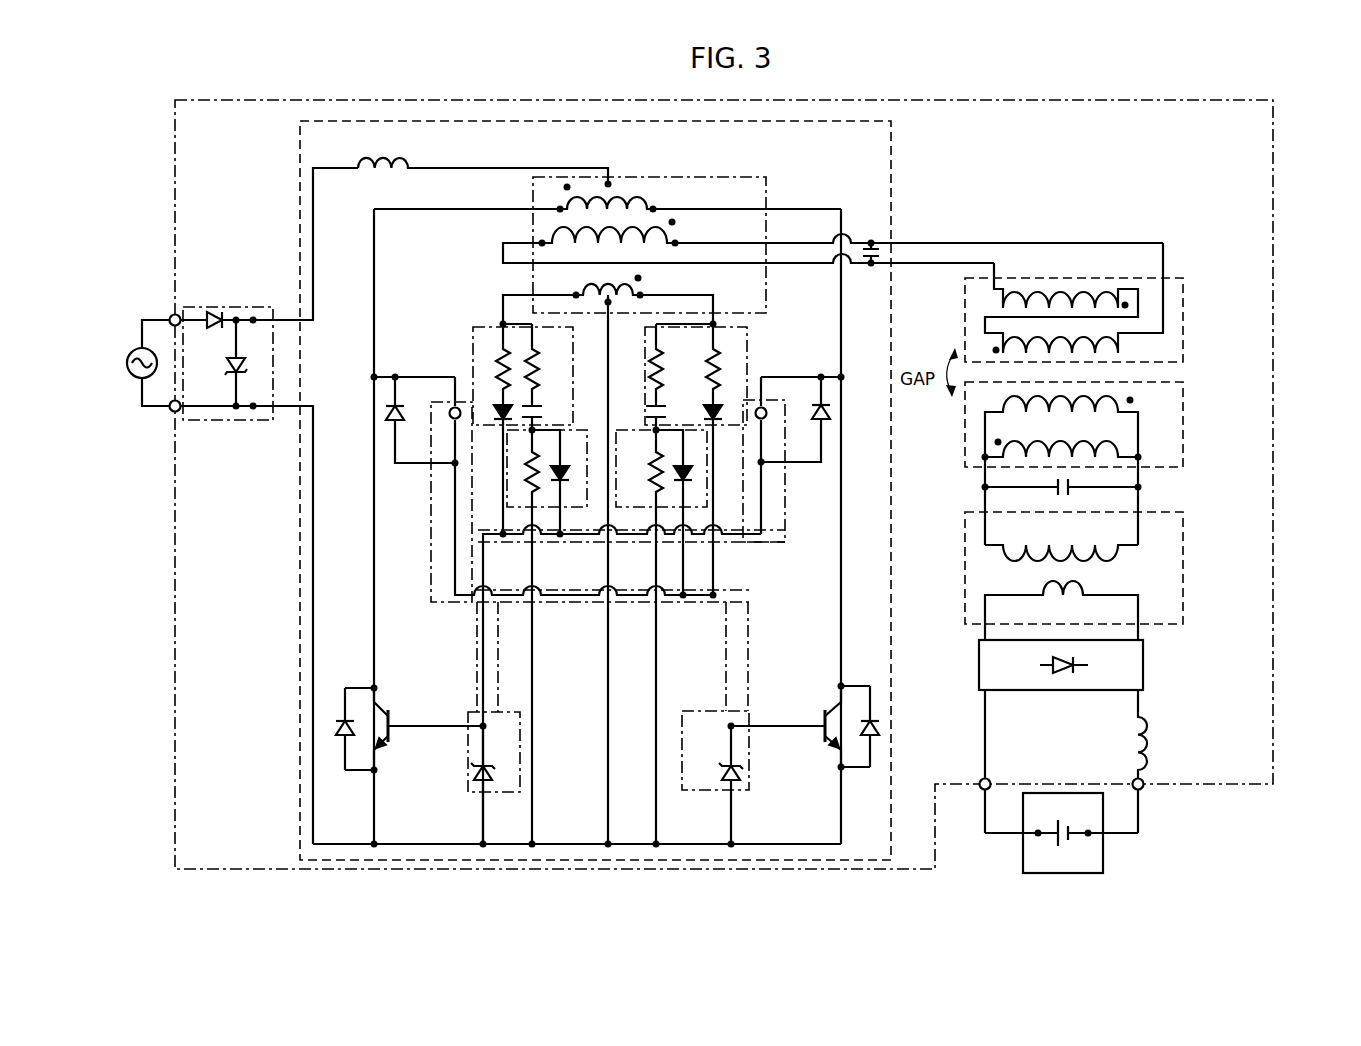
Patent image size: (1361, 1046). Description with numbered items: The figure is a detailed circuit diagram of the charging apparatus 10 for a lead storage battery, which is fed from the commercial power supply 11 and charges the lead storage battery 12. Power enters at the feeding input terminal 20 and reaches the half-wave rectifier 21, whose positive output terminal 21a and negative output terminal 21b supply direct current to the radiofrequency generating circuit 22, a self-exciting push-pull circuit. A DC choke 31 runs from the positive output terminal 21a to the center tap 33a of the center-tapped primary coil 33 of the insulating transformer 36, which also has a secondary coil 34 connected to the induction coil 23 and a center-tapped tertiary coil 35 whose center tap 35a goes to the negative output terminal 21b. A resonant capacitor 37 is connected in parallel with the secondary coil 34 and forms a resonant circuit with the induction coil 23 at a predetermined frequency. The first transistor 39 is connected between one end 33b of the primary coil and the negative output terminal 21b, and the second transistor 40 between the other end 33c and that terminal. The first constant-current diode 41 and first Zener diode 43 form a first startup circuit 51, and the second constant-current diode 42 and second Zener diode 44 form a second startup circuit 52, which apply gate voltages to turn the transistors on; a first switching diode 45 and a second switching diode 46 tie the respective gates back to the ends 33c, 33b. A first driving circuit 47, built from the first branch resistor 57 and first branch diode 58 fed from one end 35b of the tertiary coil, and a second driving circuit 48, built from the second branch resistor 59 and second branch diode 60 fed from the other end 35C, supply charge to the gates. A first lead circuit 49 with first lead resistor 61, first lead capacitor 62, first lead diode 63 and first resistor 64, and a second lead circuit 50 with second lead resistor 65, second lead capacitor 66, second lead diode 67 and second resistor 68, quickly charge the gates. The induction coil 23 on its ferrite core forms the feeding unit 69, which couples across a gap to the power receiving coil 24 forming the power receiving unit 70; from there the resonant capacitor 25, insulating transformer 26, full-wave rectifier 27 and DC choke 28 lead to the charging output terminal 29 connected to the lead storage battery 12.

The charging apparatus 10 is at (1285, 130).
The commercial power supply 11 is at (134, 348).
The lead storage battery 12 is at (1103, 848).
The feeding input terminal 20 is at (173, 314).
The half-wave rectifier 21 is at (228, 307).
The positive output terminal 21a is at (255, 316).
The negative output terminal 21b is at (255, 410).
The radiofrequency generating circuit 22 is at (893, 183).
The induction coil 23 is at (1003, 297).
The power receiving coil 24 is at (1003, 400).
The resonant capacitor 25 is at (1055, 490).
The insulating transformer 26 is at (1183, 572).
The full-wave rectifier 27 is at (1143, 665).
The DC choke 28 is at (1152, 728).
The charging output terminal 29 is at (982, 778).
The DC choke 31 is at (412, 160).
The center-tapped primary coil 33 is at (640, 190).
The center tap 33a is at (608, 182).
The one end of the center-tapped primary coil 33b is at (560, 208).
The other end of the center-tapped primary coil 33c is at (655, 207).
The secondary coil 34 is at (675, 243).
The center-tapped tertiary coil 35 is at (625, 297).
The center tap 35a is at (607, 304).
The one end of the center-tapped tertiary coil 35b is at (576, 294).
The other end of the center-tapped tertiary coil 35C is at (641, 294).
The insulating transformer 36 is at (766, 190).
The resonant capacitor 37 is at (871, 266).
The first transistor 39 is at (392, 720).
The second transistor 40 is at (823, 722).
The first constant-current diode 41 is at (763, 421).
The second constant-current diode 42 is at (452, 421).
The first Zener diode 43 is at (487, 764).
The second Zener diode 44 is at (727, 764).
The first switching diode 45 is at (820, 426).
The second switching diode 46 is at (395, 426).
The first driving circuit 47 is at (471, 332).
The second driving circuit 48 is at (748, 352).
The first lead circuit 49 is at (572, 398).
The second lead circuit 50 is at (640, 397).
The first startup circuit 51 is at (468, 790).
The second startup circuit 52 is at (750, 790).
The first branch resistor 57 is at (500, 354).
The first branch diode 58 is at (500, 392).
The second branch resistor 59 is at (735, 352).
The second branch diode 60 is at (735, 386).
The first lead resistor 61 is at (536, 357).
The first lead capacitor 62 is at (537, 395).
The first lead diode 63 is at (562, 470).
The first resistor 64 is at (527, 478).
The second lead resistor 65 is at (659, 358).
The second lead capacitor 66 is at (659, 395).
The second lead diode 67 is at (684, 472).
The second resistor 68 is at (652, 476).
The feeding unit 69 is at (1183, 318).
The power receiving unit 70 is at (1183, 418).